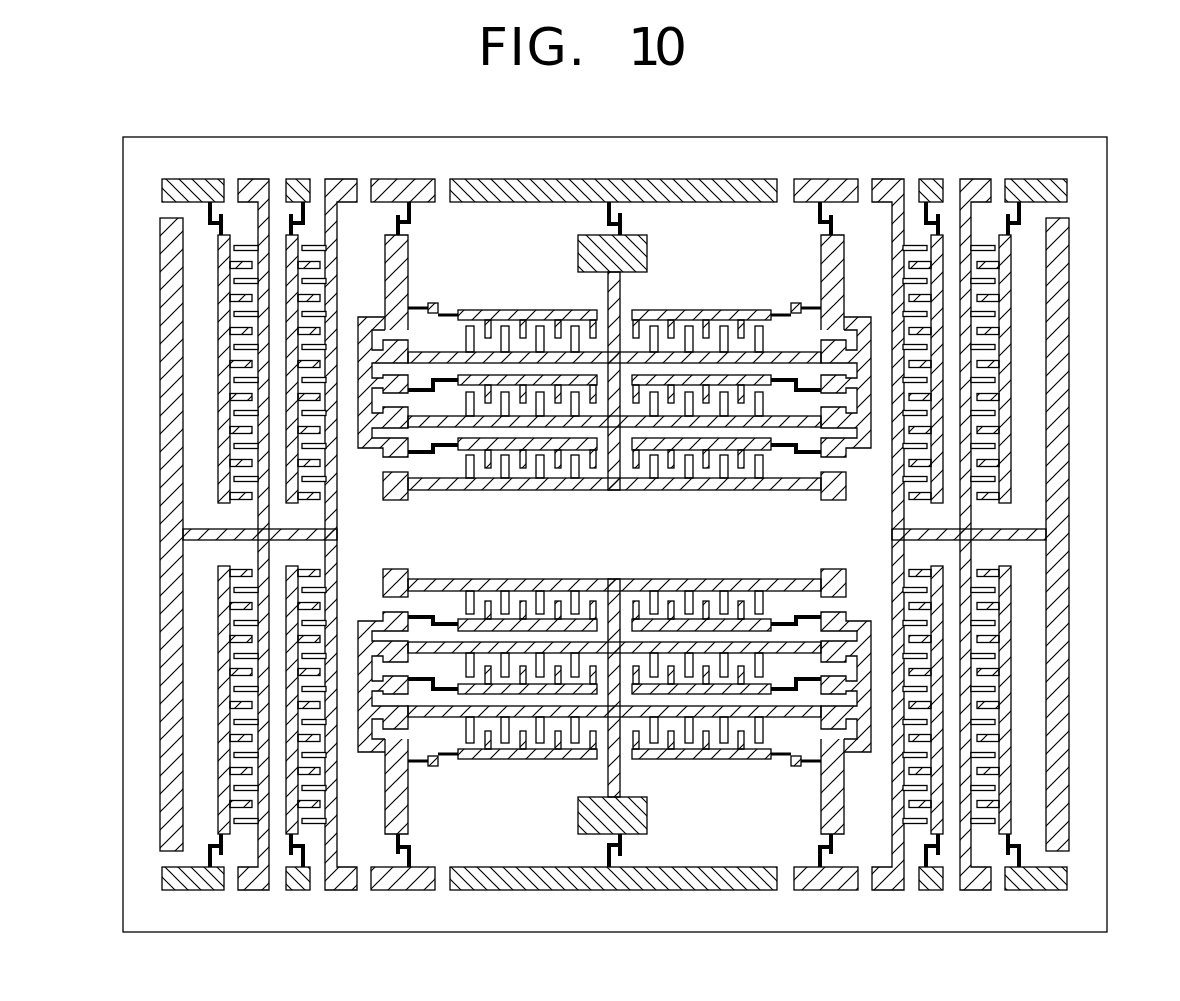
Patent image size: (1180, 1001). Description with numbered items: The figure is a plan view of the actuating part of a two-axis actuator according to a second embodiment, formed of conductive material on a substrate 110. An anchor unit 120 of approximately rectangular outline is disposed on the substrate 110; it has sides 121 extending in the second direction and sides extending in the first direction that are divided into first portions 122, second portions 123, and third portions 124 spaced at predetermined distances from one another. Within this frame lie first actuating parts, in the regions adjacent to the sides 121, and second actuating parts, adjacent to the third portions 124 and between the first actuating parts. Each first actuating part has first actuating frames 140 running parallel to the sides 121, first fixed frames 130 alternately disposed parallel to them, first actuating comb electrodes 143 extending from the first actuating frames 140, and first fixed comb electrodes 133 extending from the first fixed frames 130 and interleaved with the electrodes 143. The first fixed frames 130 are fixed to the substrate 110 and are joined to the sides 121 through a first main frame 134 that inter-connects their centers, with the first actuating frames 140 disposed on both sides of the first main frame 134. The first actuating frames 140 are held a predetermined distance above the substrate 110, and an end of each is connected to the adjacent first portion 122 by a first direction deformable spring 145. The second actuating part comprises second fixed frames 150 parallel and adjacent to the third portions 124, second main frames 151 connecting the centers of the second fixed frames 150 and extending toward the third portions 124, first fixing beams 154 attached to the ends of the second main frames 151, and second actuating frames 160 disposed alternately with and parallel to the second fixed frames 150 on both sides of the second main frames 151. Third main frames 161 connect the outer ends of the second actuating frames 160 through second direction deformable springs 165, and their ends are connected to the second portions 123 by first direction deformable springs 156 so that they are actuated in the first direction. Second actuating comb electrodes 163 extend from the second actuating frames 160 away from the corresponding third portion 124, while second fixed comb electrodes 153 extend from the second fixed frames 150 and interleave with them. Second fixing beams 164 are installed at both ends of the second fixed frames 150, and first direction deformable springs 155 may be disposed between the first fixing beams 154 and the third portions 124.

The substrate 110 is at (1107, 187).
The anchor unit 120 is at (616, 534).
The sides extending in the second direction 121 is at (166, 344).
The first portions 122 is at (293, 178).
The second portions 123 is at (401, 178).
The third portions 124 is at (692, 178).
The first fixed frames 130 is at (262, 260).
The first fixed comb electrodes 133 is at (321, 250).
The first main frame 134 is at (205, 531).
The first actuating frames 140 is at (292, 466).
The first actuating comb electrodes 143 is at (240, 300).
The first direction deformable spring 145 is at (212, 214).
The second fixed frames 150 is at (711, 355).
The second main frames 151 is at (612, 290).
The second fixed comb electrodes 153 is at (665, 333).
The first fixing beam 154 is at (636, 233).
The first direction deformable springs 155 is at (610, 225).
The first direction deformable springs 156 is at (845, 210).
The second actuating frames 160 is at (505, 312).
The third main frames 161 is at (838, 278).
The second actuating comb electrodes 163 is at (488, 328).
The second fixing beams 164 is at (396, 348).
The second direction deformable springs 165 is at (432, 304).